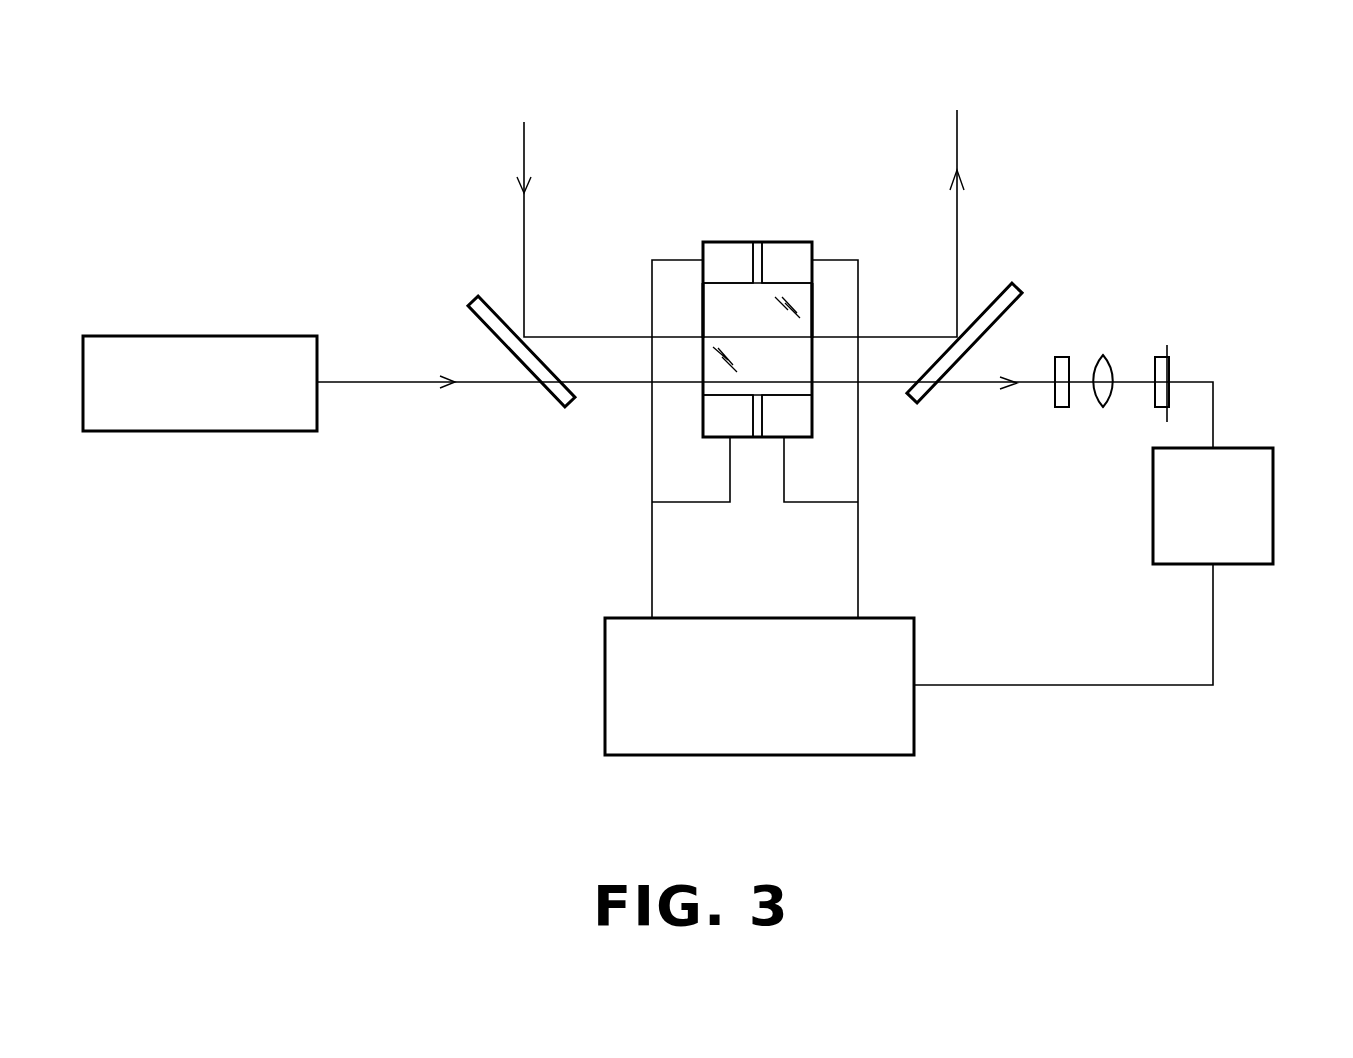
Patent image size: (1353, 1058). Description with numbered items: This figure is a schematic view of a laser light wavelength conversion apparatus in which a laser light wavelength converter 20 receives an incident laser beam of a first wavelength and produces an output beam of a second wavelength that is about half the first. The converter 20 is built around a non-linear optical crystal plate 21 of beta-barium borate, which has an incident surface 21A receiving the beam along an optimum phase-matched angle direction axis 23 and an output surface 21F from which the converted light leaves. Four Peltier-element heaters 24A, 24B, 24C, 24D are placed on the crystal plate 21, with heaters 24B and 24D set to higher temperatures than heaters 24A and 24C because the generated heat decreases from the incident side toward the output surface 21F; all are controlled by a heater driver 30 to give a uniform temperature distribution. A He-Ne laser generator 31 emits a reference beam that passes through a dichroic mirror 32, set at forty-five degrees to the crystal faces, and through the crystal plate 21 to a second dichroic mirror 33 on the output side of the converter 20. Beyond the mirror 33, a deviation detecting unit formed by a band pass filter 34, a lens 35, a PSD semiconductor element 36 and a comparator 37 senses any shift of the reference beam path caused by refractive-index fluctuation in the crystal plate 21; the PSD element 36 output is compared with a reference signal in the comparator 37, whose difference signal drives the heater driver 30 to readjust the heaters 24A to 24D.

The laser light wavelength converter 20 is at (908, 125).
The non-linear optical crystal plate 21 is at (768, 302).
The incident surface 21A is at (700, 298).
The output surface 21F is at (815, 313).
The optimum phase-matched angle direction axis 23 is at (576, 337).
The heater 24A is at (725, 418).
The heater 24B is at (795, 418).
The heater 24C is at (727, 258).
The heater 24D is at (789, 257).
The heater driver 30 is at (605, 692).
The He-Ne laser generator 31 is at (197, 336).
The dichroic mirror 32 is at (477, 299).
The dichroic mirror 33 is at (1018, 287).
The band pass filter 34 is at (1062, 407).
The lens 35 is at (1106, 355).
The PSD semiconductor element 36 is at (1168, 346).
The comparator 37 is at (1273, 505).